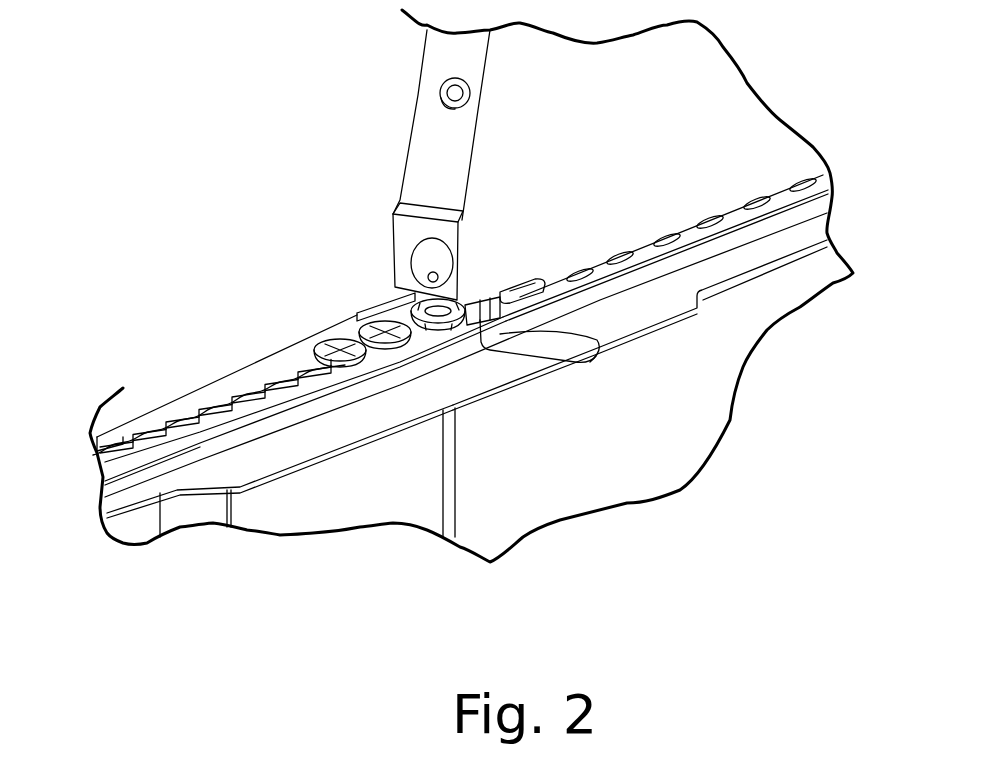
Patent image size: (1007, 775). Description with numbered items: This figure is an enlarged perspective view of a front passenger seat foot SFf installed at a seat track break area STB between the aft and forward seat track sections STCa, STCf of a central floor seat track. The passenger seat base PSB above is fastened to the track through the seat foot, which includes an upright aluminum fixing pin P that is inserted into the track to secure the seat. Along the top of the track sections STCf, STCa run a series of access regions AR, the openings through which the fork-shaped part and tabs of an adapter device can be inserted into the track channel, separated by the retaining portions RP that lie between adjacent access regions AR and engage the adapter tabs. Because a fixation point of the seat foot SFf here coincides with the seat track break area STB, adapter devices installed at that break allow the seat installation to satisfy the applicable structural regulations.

The passenger seat base PSB is at (634, 153).
The retaining portions RP is at (173, 413).
The access regions AR is at (280, 392).
The front seat foot SFf is at (376, 240).
The fixing pin P is at (598, 345).
The forward seat track section STCf is at (402, 505).
The aft seat track section STCa is at (607, 473).
The seat track break area STB is at (452, 484).